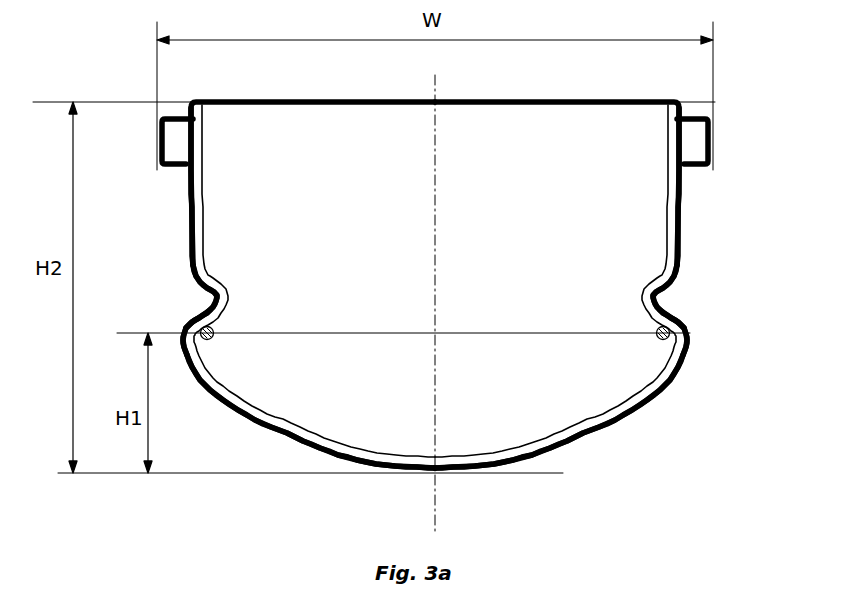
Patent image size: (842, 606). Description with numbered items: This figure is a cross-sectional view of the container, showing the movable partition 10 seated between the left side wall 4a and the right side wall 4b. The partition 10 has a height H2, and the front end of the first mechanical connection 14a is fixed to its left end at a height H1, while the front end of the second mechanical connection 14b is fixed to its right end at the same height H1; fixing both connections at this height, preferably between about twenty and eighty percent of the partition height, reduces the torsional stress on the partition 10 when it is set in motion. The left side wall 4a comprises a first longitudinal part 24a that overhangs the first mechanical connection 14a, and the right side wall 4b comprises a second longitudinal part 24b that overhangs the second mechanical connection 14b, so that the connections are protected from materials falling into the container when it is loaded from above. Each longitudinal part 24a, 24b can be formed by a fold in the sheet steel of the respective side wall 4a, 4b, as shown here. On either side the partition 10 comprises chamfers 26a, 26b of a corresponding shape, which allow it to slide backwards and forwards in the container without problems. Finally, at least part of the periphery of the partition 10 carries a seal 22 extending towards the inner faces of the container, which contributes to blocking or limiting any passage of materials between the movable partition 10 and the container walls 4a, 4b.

The partition 10 is at (493, 118).
The left side wall 4a is at (186, 226).
The right side wall 4b is at (688, 212).
The chamfer 26a is at (218, 293).
The chamfer 26b is at (650, 290).
The first longitudinal part 24a is at (197, 308).
The second longitudinal part 24b is at (675, 308).
The first mechanical connection 14a is at (214, 331).
The second mechanical connection 14b is at (656, 331).
The seal 22 is at (646, 408).